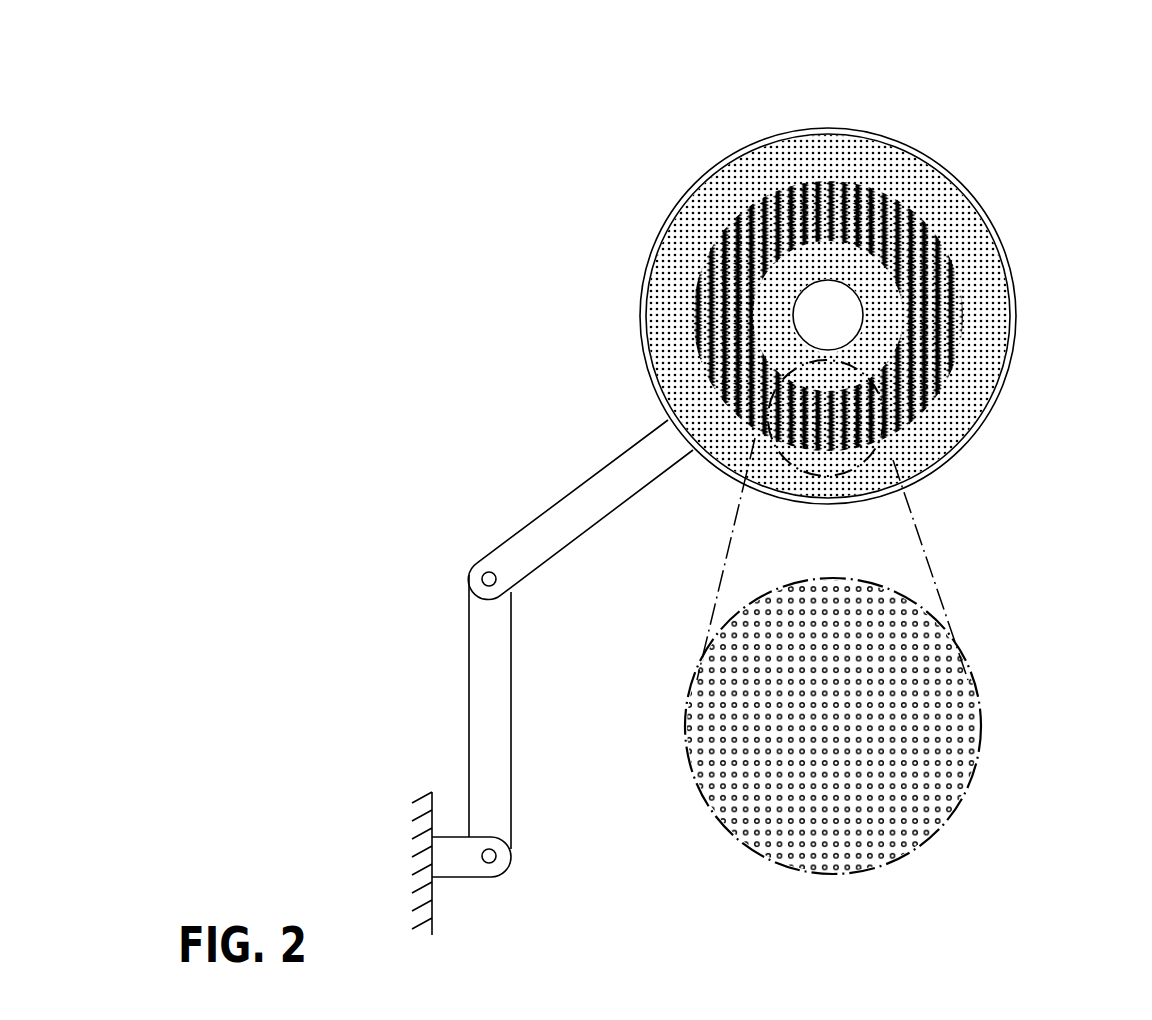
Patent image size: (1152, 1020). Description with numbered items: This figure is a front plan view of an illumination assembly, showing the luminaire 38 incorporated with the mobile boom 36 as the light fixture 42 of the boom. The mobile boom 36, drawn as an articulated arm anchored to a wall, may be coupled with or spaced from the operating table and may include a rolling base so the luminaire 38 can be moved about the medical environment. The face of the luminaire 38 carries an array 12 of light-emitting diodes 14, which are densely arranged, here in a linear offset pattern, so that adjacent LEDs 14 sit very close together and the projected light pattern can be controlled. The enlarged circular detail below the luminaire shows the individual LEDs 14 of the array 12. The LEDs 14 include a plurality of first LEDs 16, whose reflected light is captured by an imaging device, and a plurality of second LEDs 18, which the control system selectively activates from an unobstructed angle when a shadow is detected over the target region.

The array 12 is at (985, 372).
The light-emitting diodes 14 is at (810, 847).
The first LEDs 16 is at (890, 140).
The second LEDs 18 is at (985, 342).
The mobile boom 36 is at (575, 498).
The luminaire 38 is at (988, 217).
The light fixture 42 is at (639, 291).